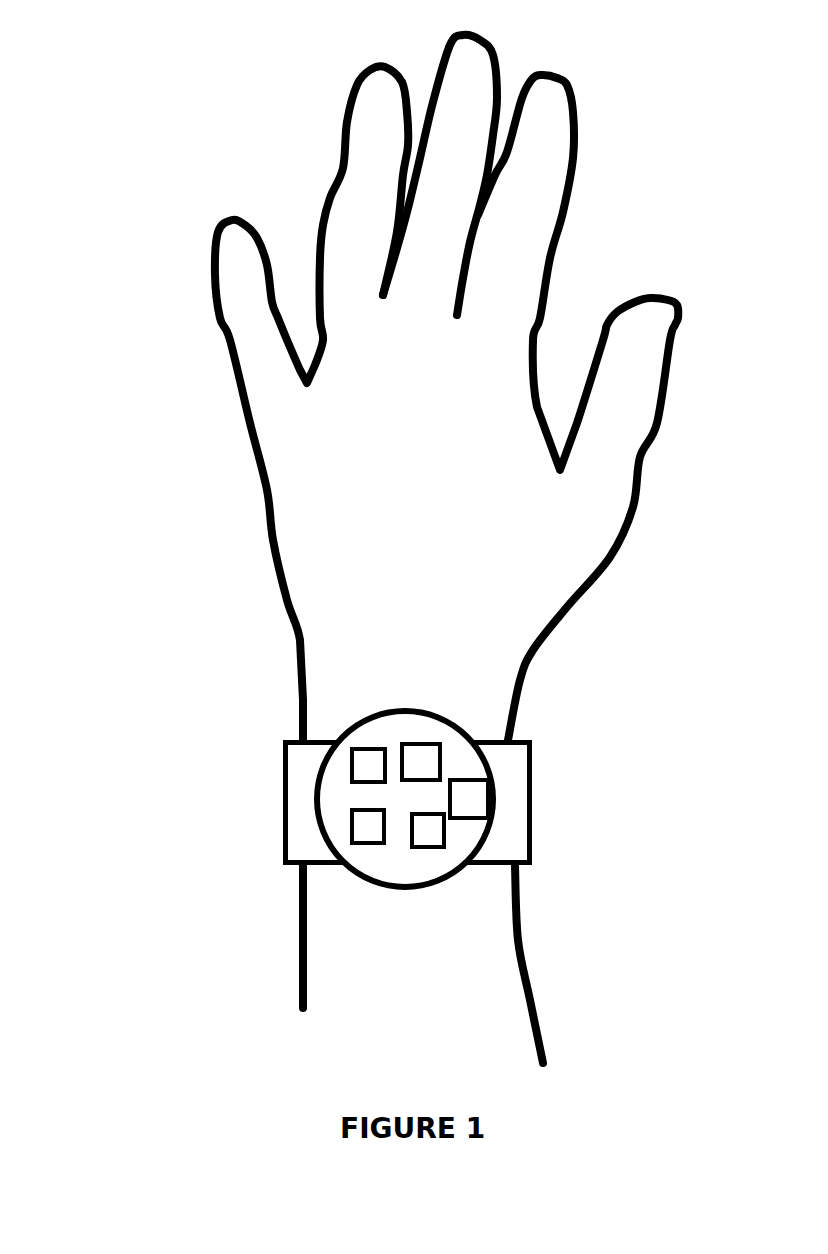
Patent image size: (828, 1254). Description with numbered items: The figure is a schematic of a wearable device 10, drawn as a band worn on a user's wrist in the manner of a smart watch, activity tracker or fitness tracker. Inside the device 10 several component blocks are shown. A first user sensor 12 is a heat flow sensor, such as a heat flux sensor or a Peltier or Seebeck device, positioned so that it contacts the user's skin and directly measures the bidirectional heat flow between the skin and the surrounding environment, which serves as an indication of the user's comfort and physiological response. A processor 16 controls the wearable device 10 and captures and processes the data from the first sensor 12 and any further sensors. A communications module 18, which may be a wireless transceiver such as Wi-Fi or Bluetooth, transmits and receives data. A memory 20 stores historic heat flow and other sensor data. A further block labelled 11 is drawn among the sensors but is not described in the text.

The wearable device 10 is at (285, 857).
The sensor 11 is at (363, 747).
The first user sensor 12 is at (368, 847).
The processor 16 is at (438, 848).
The communications module 18 is at (438, 742).
The memory 20 is at (493, 799).